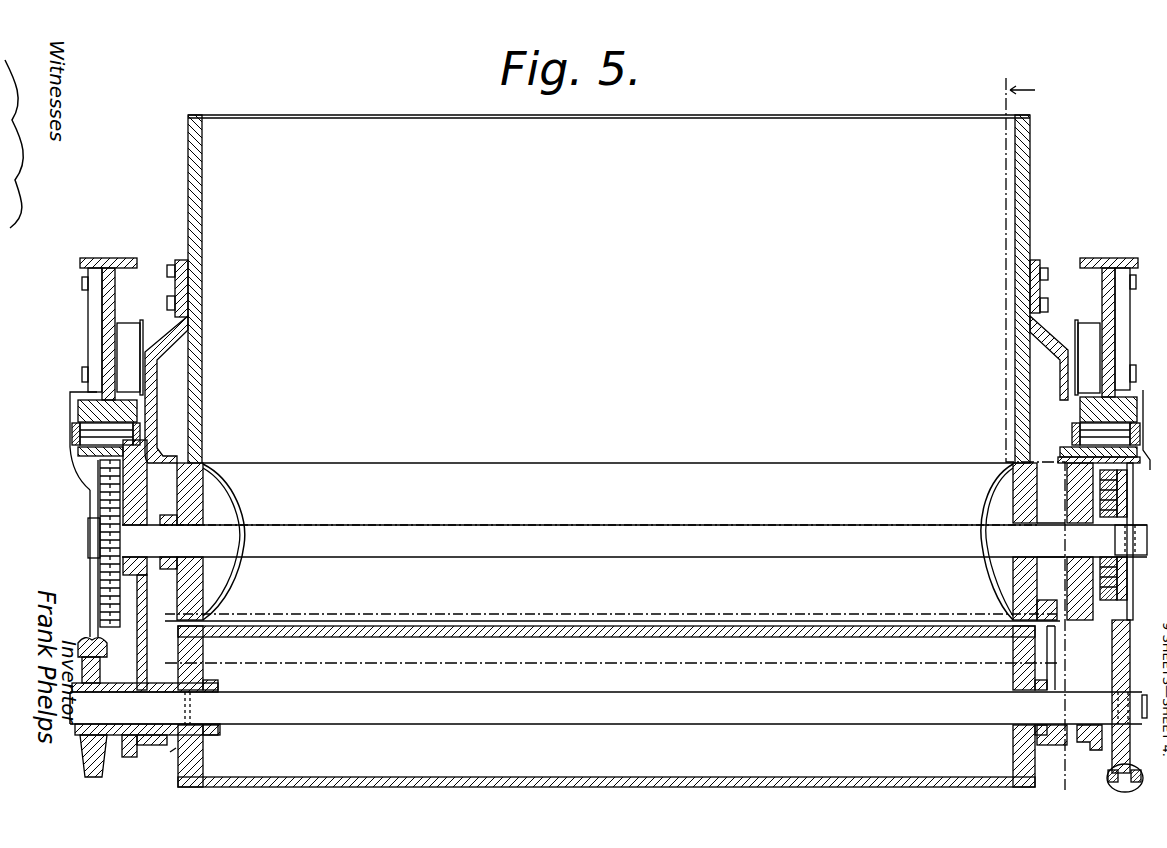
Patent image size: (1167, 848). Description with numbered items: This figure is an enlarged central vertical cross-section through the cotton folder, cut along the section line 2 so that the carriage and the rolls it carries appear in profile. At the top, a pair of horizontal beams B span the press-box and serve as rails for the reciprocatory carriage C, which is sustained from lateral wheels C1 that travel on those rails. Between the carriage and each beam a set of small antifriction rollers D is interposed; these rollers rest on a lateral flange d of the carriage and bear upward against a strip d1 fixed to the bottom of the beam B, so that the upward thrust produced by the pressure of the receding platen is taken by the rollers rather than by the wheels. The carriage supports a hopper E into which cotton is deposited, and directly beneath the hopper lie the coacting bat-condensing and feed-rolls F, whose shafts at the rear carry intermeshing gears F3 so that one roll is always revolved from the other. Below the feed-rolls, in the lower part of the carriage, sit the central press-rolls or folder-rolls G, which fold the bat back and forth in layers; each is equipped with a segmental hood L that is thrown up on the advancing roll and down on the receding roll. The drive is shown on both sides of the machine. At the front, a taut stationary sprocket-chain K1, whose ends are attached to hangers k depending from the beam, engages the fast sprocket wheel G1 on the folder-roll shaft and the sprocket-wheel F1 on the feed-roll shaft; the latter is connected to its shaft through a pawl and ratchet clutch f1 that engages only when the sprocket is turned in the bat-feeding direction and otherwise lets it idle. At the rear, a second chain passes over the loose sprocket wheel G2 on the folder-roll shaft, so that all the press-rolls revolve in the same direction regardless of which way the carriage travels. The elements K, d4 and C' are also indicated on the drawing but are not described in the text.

The hopper E is at (609, 289).
The bat-condensing and feed-rolls F is at (634, 542).
The central press-rolls G is at (608, 706).
The horizontal beams B is at (100, 258).
The lateral wheels C1 is at (1087, 330).
The strip d1 is at (1108, 412).
The antifriction rollers D is at (80, 432).
The lateral flange d is at (78, 452).
The reciprocatory carriage C is at (610, 524).
The intermeshing gears F3 is at (100, 505).
The rod K is at (90, 603).
The sprocket wheel G2 is at (80, 640).
The segmental hood L is at (118, 677).
The pin d4 is at (178, 755).
The sprocket-chain K1 is at (1063, 796).
The sprocket-wheel F1 is at (1085, 510).
The pawl and ratchet clutch f1 is at (1100, 575).
The sprocket wheel G1 is at (1112, 650).
The hub C' is at (1074, 749).
The hangers k is at (1122, 786).
The section line 2 is at (541, 435).